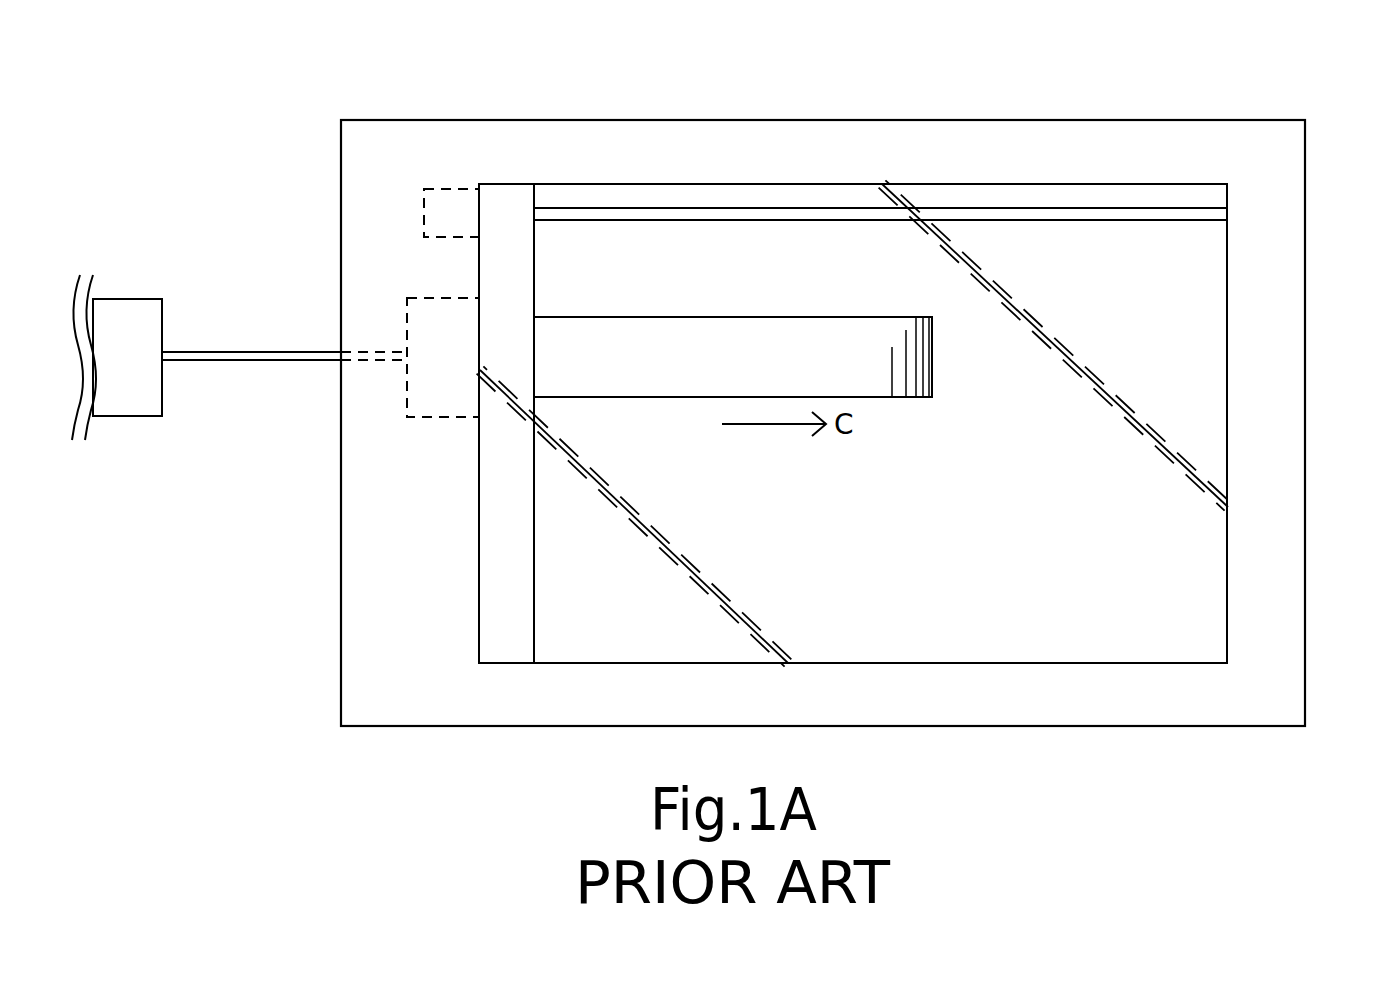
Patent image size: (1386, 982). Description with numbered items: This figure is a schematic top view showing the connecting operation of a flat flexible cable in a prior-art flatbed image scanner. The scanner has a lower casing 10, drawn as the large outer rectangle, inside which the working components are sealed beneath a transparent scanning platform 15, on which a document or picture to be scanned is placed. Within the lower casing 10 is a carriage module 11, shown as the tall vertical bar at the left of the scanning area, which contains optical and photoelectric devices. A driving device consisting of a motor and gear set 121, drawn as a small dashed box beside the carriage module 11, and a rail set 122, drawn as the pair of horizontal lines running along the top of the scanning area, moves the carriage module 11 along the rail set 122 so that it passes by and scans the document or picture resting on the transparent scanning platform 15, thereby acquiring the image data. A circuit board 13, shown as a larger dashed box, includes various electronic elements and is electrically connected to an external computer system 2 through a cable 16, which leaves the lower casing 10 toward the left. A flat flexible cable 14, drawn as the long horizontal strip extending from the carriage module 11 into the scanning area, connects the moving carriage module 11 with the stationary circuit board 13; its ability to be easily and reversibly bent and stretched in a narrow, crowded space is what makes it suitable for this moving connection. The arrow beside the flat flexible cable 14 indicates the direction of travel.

The computer system 2 is at (113, 313).
The lower casing 10 is at (1080, 140).
The carriage module 11 is at (507, 205).
The circuit board 13 is at (430, 325).
The flat flexible cable 14 is at (786, 330).
The transparent scanning platform 15 is at (1198, 407).
The cable 16 is at (208, 352).
The motor and gear set 121 is at (443, 207).
The rail set 122 is at (1173, 214).